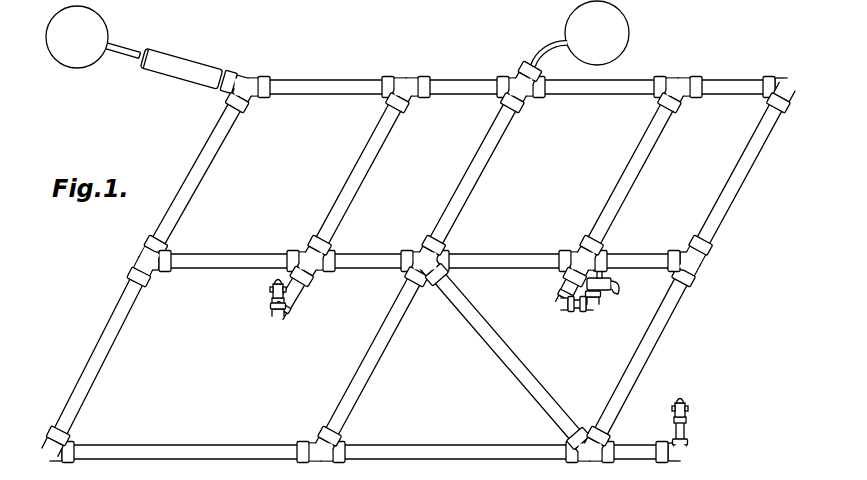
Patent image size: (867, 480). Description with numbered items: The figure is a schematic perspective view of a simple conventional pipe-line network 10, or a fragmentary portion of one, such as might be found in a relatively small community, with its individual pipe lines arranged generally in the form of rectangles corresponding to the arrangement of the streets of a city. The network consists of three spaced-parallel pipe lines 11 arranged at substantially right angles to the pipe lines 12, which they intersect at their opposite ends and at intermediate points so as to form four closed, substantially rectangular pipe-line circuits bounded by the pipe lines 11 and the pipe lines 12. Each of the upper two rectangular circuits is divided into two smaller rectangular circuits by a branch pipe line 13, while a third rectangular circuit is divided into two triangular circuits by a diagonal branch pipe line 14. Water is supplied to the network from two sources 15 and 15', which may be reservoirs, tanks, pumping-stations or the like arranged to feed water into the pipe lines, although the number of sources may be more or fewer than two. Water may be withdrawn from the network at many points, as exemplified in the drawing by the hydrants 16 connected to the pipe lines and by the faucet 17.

The pipe-line network 10 is at (248, 120).
The pipe lines 11 is at (203, 152).
The pipe lines 12 is at (341, 78).
The branch pipe line 13 is at (351, 173).
The diagonal branch pipe line 14 is at (491, 348).
The source 15 is at (134, 55).
The source 15' is at (601, 33).
The hydrants 16 is at (268, 291).
The faucet 17 is at (614, 283).